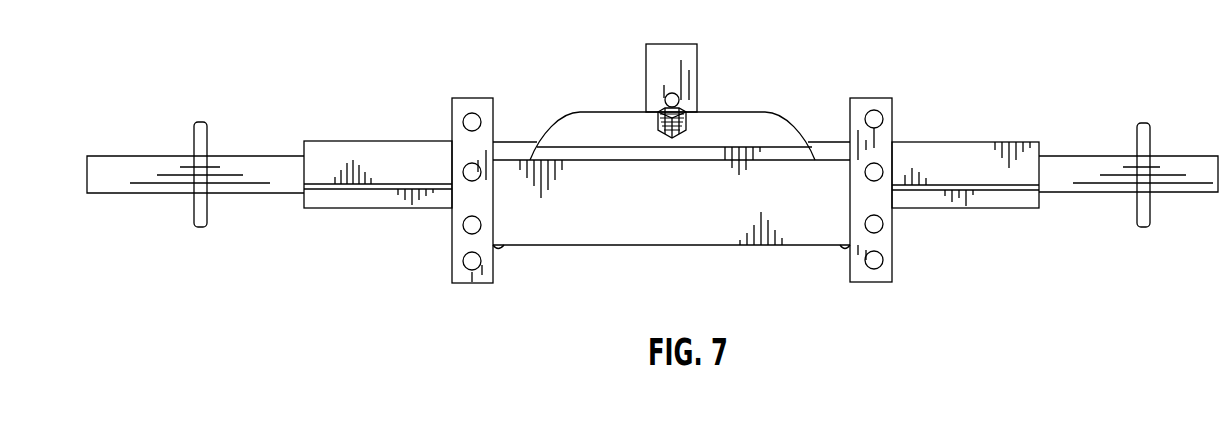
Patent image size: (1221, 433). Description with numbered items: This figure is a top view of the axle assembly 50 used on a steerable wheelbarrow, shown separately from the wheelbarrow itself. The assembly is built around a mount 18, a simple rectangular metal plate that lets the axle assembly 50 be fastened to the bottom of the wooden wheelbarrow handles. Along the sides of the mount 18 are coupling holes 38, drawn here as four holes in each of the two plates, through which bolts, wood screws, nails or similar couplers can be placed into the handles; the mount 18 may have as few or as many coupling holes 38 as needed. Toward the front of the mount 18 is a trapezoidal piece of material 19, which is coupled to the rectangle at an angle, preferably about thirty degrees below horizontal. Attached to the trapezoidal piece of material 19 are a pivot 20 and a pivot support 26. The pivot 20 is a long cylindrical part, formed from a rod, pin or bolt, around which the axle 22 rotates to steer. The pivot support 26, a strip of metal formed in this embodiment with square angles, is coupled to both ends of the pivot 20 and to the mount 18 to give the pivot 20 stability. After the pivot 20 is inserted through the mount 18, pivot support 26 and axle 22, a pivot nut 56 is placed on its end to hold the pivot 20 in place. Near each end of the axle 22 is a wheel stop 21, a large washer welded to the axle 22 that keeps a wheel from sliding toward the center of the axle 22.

The mount 18 is at (860, 100).
The trapezoidal piece of material 19 is at (582, 125).
The pivot 20 is at (687, 100).
The wheel stop 21 is at (197, 227).
The axle 22 is at (1020, 148).
The pivot support 26 is at (687, 56).
The coupling holes 38 is at (467, 168).
The axle assembly 50 is at (1068, 72).
The pivot nut 56 is at (687, 133).